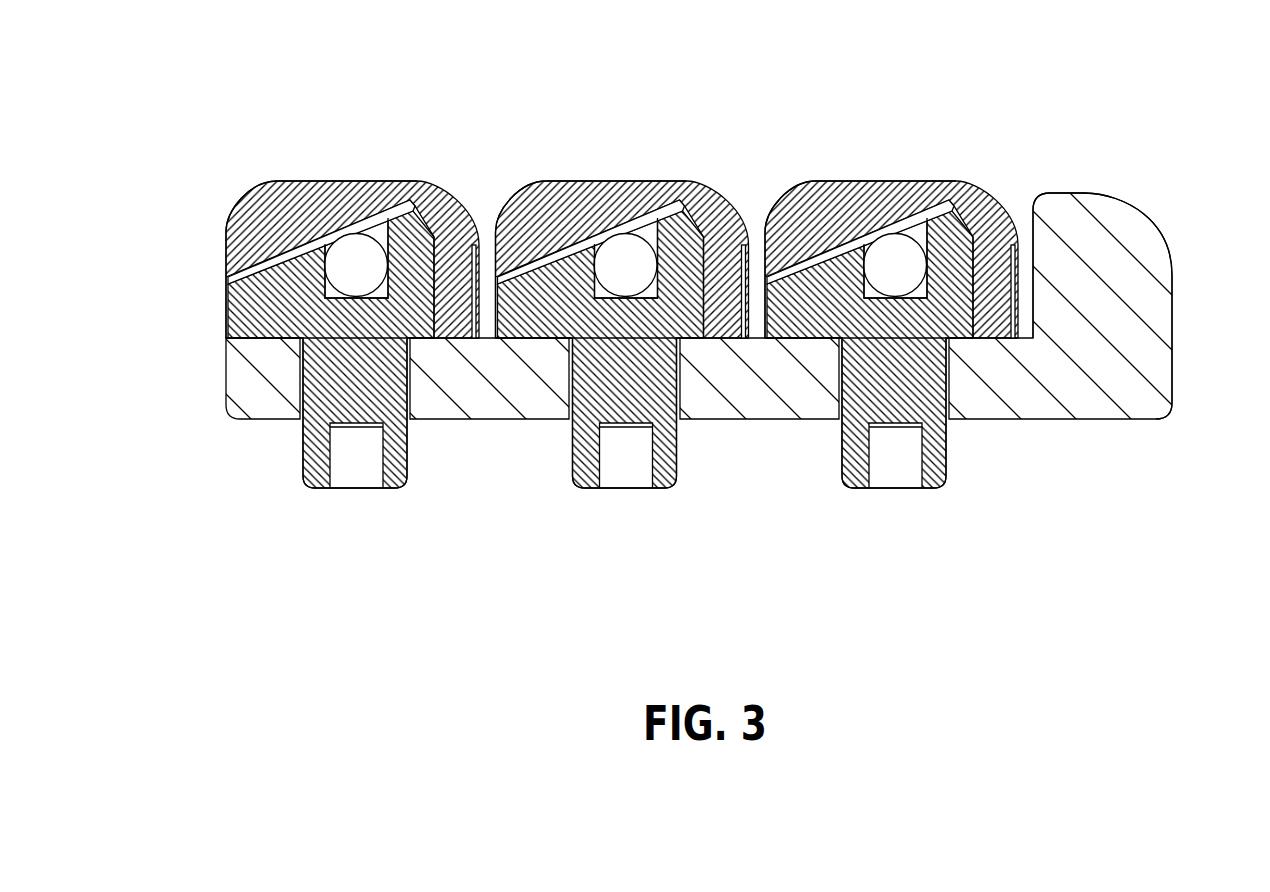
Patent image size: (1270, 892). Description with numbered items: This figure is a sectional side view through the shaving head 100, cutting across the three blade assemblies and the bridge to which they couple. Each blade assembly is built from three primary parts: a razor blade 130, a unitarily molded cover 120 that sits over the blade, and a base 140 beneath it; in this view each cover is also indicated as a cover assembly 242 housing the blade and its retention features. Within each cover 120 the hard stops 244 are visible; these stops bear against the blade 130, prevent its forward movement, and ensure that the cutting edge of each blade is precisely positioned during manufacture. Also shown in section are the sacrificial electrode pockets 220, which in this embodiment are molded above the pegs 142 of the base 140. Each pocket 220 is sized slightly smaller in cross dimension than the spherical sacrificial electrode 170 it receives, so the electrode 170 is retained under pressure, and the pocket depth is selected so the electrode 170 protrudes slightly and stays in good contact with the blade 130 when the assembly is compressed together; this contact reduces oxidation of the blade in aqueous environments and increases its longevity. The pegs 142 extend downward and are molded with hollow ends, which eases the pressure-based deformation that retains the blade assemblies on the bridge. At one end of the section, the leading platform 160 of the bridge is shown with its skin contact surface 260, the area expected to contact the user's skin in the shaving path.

The shaving head 100 is at (289, 600).
The cover 120 is at (244, 202).
The razor blade 130 is at (304, 184).
The base 140 is at (241, 308).
The pegs 142 is at (406, 479).
The leading platform 160 is at (1175, 266).
The sacrificial electrodes 170 is at (366, 258).
The sacrificial electrode pockets 220 is at (326, 295).
The cover 242 is at (349, 174).
The hard stops 244 is at (417, 201).
The skin contact surface 260 is at (1120, 197).